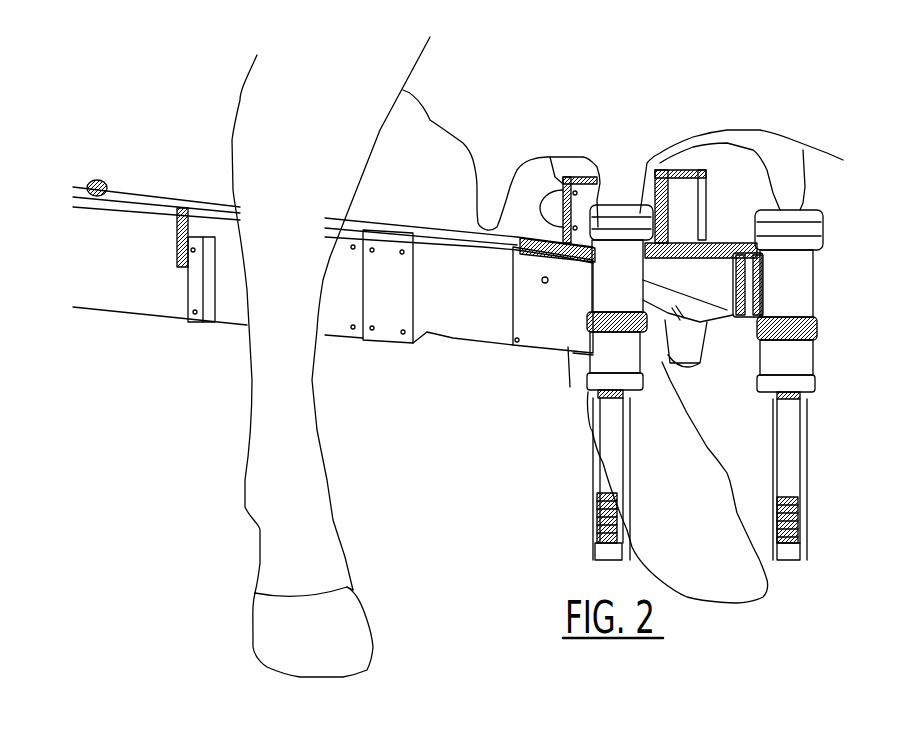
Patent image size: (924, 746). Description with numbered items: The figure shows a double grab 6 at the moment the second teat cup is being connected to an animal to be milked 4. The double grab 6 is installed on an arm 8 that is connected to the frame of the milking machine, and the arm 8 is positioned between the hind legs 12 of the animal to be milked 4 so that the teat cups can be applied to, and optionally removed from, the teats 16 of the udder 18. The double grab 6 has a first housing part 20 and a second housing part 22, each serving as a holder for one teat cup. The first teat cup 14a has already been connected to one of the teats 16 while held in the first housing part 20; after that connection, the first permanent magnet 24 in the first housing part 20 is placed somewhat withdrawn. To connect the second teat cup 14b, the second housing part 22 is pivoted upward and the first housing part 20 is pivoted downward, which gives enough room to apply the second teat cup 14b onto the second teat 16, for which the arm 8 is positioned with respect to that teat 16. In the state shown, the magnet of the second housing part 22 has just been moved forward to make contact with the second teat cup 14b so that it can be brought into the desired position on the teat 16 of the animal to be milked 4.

The animal to be milked 4 is at (255, 103).
The double grab 6 is at (733, 434).
The arm 8 is at (158, 386).
The hind legs 12 is at (332, 563).
The first teat cup 14a is at (600, 303).
The second teat cup 14b is at (800, 312).
The teats 16 is at (483, 207).
The udder 18 is at (452, 98).
The first housing part 20 is at (788, 292).
The second housing part 22 is at (717, 267).
The first magnet 24 is at (687, 355).